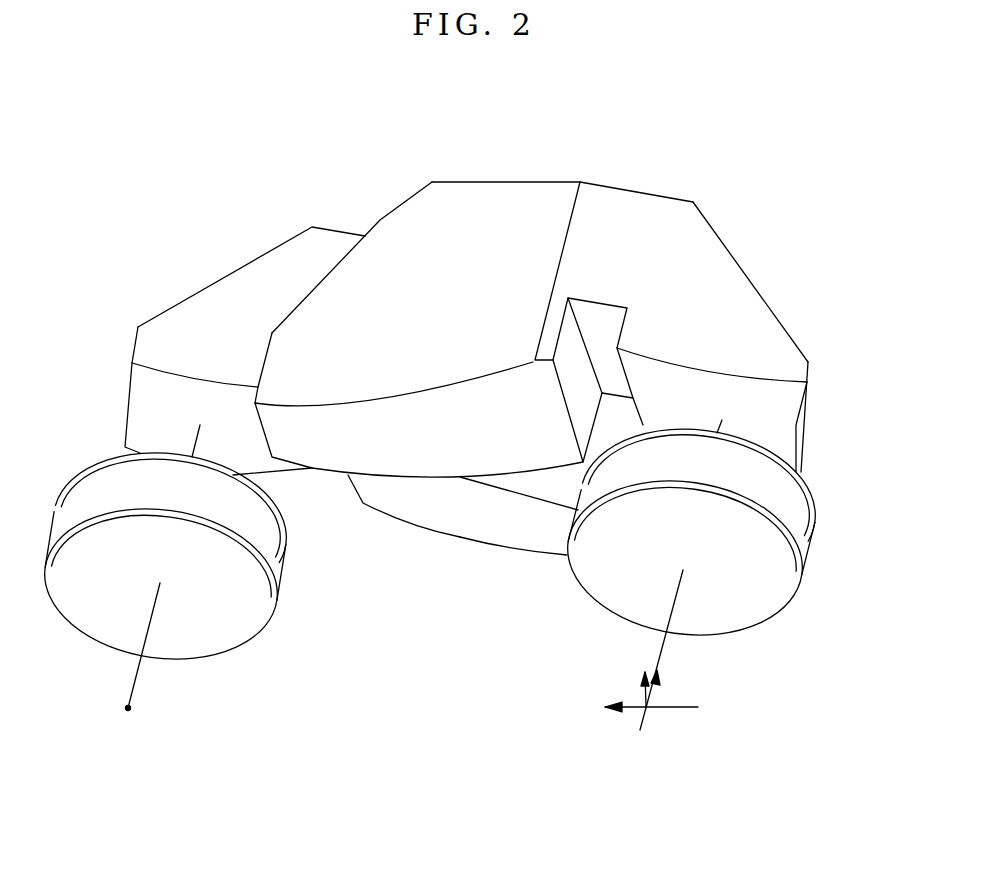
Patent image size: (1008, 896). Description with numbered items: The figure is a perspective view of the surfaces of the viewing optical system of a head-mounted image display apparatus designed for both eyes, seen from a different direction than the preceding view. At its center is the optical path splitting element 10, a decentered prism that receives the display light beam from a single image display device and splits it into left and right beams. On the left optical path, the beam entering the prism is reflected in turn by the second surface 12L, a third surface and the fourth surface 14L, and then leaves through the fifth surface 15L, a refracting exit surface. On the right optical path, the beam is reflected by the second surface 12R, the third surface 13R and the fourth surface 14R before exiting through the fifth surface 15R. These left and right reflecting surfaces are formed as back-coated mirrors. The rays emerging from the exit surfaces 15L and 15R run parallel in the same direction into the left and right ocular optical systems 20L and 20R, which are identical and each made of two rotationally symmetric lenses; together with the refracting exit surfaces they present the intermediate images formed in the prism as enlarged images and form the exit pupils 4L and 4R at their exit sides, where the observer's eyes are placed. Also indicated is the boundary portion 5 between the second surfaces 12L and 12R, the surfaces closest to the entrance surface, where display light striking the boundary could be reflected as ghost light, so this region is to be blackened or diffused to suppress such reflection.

The optical path splitting element 10 is at (527, 197).
The third surface 13R is at (380, 222).
The fourth surface 14L is at (222, 282).
The fourth surface 14R is at (748, 273).
The fifth surface 15L is at (138, 405).
The fifth surface 15R is at (783, 432).
The second surface 12L is at (487, 533).
The second surface 12R is at (357, 453).
The boundary portion 5 is at (460, 480).
The left ocular optical system 20L is at (310, 547).
The right ocular optical system 20R is at (832, 522).
The exit pupil 4L is at (162, 703).
The exit pupil 4R is at (678, 696).